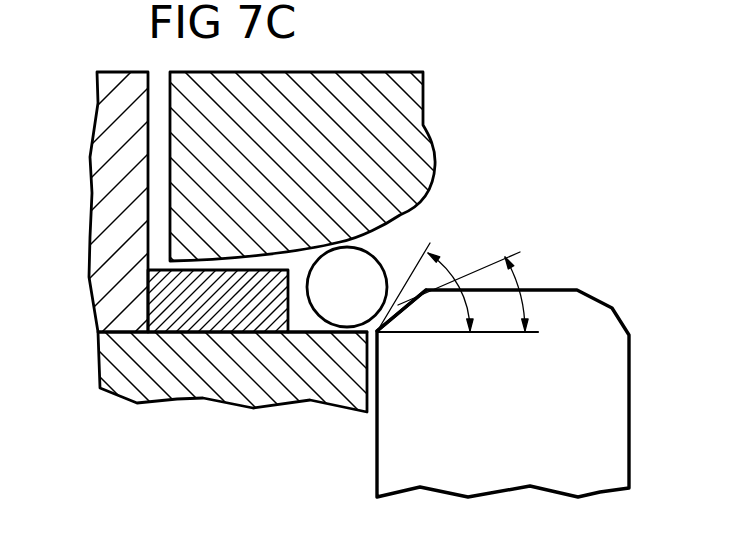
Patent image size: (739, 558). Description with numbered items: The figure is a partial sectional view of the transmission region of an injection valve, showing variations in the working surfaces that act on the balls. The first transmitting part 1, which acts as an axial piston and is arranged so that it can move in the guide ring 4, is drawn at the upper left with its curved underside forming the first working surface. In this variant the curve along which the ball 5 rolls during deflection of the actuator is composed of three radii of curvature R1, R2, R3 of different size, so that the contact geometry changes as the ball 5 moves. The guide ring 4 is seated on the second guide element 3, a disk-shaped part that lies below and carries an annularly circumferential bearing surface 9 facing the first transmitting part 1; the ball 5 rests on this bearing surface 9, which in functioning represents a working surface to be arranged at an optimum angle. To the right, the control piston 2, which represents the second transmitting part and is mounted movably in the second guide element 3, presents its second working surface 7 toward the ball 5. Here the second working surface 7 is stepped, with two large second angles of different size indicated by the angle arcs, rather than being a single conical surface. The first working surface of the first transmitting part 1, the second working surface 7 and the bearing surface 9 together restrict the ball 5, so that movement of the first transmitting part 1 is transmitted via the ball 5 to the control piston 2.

The first transmitting part 1 is at (185, 119).
The control piston 2 is at (600, 423).
The second guide element 3 is at (177, 383).
The guide ring 4 is at (108, 237).
The ball 5 is at (362, 277).
The second working surface 7 is at (413, 303).
The bearing surface 9 is at (318, 335).
The first radius of curvature R1 is at (222, 260).
The second radius of curvature R2 is at (344, 232).
The third radius of curvature R3 is at (425, 187).